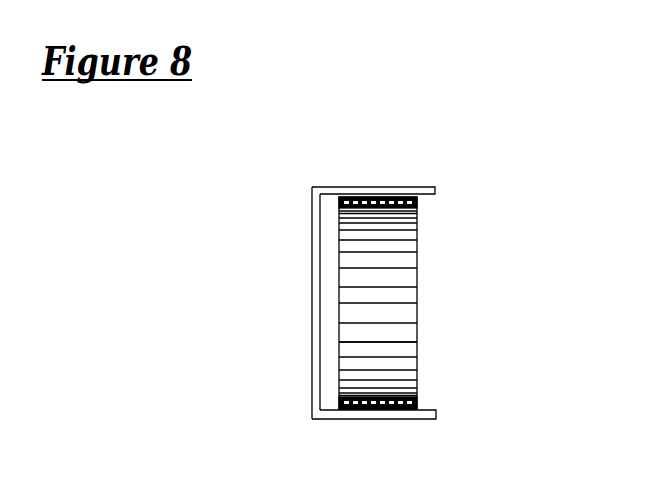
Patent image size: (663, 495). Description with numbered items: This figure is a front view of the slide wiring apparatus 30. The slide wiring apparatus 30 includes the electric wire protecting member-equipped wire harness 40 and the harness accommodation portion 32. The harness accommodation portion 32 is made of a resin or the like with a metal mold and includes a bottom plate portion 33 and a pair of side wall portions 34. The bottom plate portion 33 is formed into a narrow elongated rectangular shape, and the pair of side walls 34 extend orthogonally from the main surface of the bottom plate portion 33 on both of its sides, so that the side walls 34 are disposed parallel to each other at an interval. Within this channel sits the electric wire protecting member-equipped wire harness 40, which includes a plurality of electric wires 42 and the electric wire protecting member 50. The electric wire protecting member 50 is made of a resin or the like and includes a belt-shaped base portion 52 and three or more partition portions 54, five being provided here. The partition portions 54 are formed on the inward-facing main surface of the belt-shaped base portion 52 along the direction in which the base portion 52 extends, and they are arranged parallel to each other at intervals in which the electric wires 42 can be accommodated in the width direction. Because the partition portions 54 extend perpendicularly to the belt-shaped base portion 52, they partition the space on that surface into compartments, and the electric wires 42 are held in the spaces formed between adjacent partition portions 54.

The slide wiring apparatus 30 is at (346, 165).
The harness accommodation portion 32 is at (311, 225).
The bottom plate portion 33 is at (316, 318).
The side wall portions 34 is at (428, 190).
The electric wire protecting member-equipped wire harness 40 is at (428, 275).
The electric wires 42 is at (410, 412).
The electric wire protecting member 50 is at (417, 310).
The belt-shaped base portion 52 is at (405, 337).
The partition portions 54 is at (410, 196).